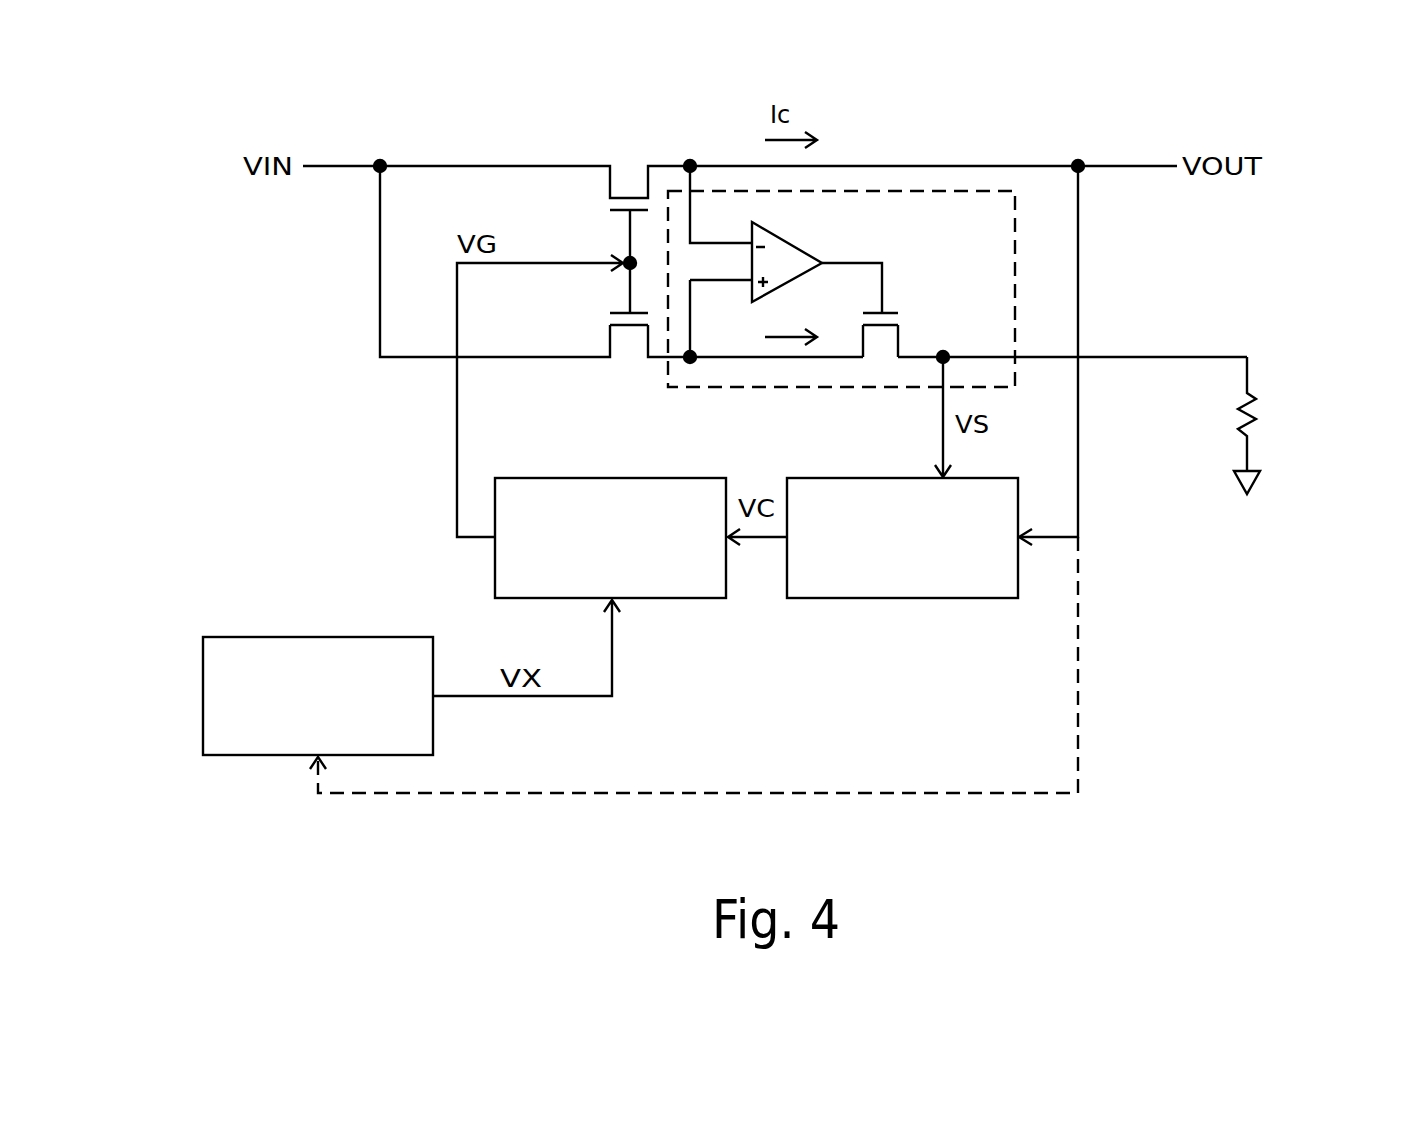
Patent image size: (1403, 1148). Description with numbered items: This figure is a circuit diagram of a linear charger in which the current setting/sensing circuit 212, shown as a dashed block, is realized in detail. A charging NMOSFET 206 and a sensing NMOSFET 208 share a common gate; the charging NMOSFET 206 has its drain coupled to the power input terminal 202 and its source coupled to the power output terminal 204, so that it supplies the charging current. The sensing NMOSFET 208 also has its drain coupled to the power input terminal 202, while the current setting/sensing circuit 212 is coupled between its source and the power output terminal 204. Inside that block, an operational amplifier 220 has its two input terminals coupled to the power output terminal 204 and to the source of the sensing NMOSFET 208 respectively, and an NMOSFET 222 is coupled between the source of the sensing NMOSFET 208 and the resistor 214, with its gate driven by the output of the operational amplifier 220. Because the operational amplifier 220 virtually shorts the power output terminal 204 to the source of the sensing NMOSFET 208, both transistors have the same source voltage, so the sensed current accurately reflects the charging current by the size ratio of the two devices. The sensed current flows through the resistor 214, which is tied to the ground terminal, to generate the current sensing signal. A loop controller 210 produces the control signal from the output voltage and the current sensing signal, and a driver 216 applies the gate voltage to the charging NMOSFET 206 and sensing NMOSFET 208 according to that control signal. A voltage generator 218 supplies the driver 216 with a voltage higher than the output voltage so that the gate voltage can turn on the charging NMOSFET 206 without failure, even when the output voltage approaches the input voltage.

The power input terminal 202 is at (384, 158).
The power output terminal 204 is at (1083, 158).
The charging NMOSFET 206 is at (597, 212).
The sensing NMOSFET 208 is at (596, 311).
The loop controller 210 is at (902, 598).
The current setting/sensing circuit 212 is at (957, 309).
The resistor 214 is at (1278, 391).
The driver 216 is at (608, 478).
The voltage generator 218 is at (318, 637).
The operational amplifier 220 is at (792, 237).
The NMOSFET 222 is at (920, 310).